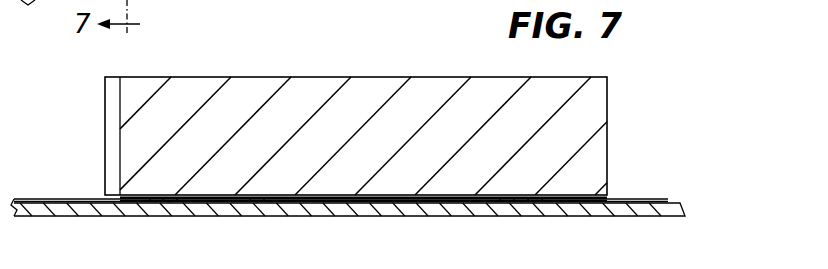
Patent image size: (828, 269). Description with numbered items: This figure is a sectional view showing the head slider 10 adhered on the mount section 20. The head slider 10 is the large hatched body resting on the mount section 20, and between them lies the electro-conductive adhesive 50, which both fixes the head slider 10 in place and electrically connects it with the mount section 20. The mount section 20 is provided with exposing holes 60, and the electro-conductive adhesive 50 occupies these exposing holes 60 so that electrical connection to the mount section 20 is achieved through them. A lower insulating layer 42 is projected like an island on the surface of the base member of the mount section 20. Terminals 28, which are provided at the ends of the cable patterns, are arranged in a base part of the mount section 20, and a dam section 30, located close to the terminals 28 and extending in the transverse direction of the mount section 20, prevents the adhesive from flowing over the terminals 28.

The head slider 10 is at (365, 87).
The mount section 20 is at (618, 205).
The terminals 28 is at (47, 200).
The dam section 30 is at (153, 217).
The lower insulating layer 42 is at (345, 205).
The electro-conductive adhesive 50 is at (250, 210).
The exposing holes 60 is at (289, 206).